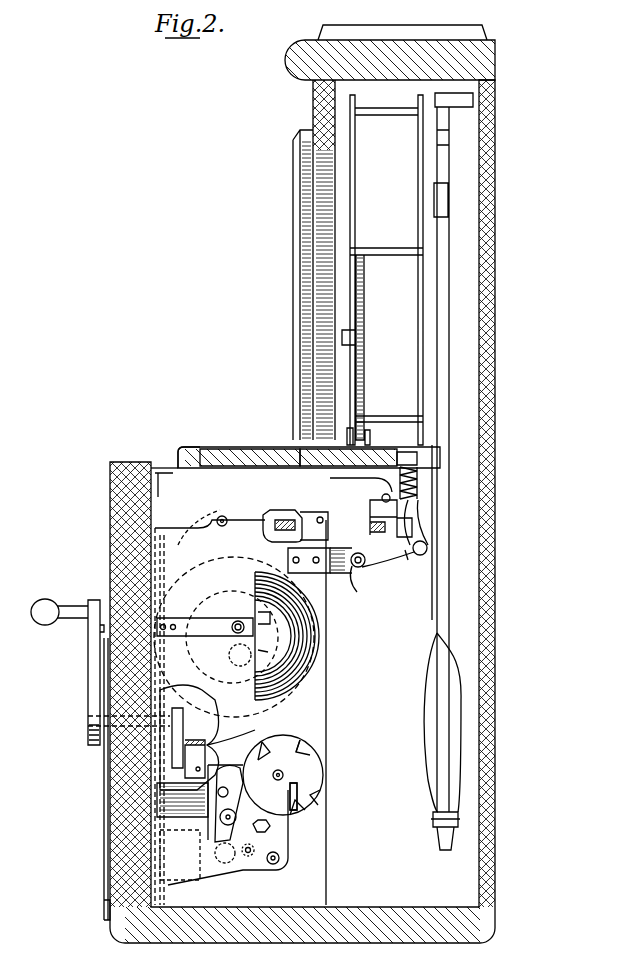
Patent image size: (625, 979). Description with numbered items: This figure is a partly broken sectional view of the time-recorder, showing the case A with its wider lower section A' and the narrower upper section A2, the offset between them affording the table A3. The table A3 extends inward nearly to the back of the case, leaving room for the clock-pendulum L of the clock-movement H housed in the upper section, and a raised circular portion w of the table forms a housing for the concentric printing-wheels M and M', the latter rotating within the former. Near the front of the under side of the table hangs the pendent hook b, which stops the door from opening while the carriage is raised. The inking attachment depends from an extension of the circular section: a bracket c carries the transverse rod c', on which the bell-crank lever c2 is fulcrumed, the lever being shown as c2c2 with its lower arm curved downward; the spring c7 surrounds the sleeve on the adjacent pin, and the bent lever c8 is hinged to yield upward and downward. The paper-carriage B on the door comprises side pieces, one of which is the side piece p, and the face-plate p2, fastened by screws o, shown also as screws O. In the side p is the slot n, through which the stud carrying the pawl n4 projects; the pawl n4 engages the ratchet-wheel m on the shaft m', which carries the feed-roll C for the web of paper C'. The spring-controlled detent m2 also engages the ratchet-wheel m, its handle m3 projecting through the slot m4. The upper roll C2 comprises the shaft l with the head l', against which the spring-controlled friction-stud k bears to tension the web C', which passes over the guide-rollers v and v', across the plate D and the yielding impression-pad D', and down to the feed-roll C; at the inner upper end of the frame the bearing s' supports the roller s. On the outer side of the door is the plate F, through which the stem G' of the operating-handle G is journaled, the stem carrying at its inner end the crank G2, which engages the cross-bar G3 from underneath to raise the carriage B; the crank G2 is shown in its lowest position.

The case A is at (333, 511).
The lower section A' is at (274, 269).
The upper section A2 is at (290, 260).
The table A3 is at (182, 450).
The housing w is at (309, 445).
The printing-wheel M is at (250, 430).
The printing-wheel M' is at (340, 443).
The pendent hook b is at (174, 487).
The screws o is at (195, 524).
The clock-movement H is at (382, 270).
The clock-pendulum L is at (452, 678).
The paper-carriage B is at (379, 675).
The bracket c is at (430, 475).
The spring c7 is at (422, 489).
The bell-crank lever c2 is at (418, 522).
The rod c' is at (405, 565).
The bell-crank lever c2c2 is at (400, 569).
The bearings s' is at (371, 507).
The roller s is at (354, 552).
The plate D is at (272, 513).
The bent lever c8 is at (288, 518).
The impression-pad D' is at (313, 512).
The guide-roller v is at (314, 529).
The guide-roller v' is at (219, 506).
The web of paper C' is at (310, 636).
The upper roll C2 is at (265, 618).
The head l' is at (316, 663).
The friction-stud k is at (234, 637).
The shaft l is at (205, 607).
The operating-handle G is at (67, 672).
The stem G' is at (105, 724).
The plate F is at (106, 742).
The crank G2 is at (182, 716).
The cross-bar G3 is at (263, 712).
The face-plate p2 is at (156, 784).
The screws O is at (157, 858).
The roll C is at (300, 775).
The ratchet-wheel m is at (324, 744).
The pawl n4 is at (262, 742).
The side piece p is at (240, 860).
The slot n is at (260, 740).
The shaft m' is at (323, 795).
The slot m4 is at (272, 826).
The handle m3 is at (285, 835).
The detent m2 is at (282, 858).